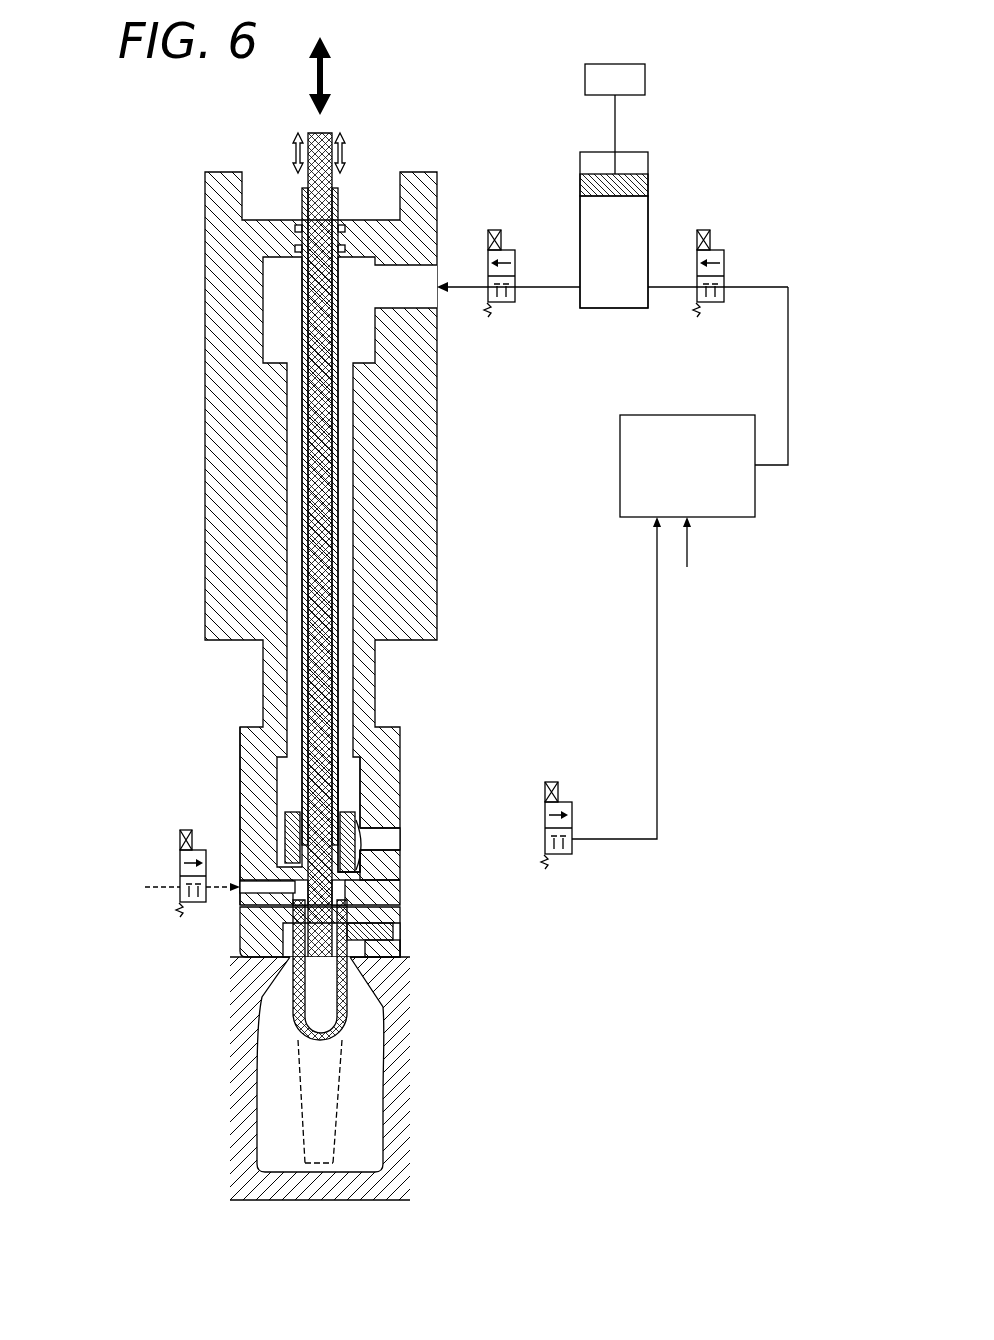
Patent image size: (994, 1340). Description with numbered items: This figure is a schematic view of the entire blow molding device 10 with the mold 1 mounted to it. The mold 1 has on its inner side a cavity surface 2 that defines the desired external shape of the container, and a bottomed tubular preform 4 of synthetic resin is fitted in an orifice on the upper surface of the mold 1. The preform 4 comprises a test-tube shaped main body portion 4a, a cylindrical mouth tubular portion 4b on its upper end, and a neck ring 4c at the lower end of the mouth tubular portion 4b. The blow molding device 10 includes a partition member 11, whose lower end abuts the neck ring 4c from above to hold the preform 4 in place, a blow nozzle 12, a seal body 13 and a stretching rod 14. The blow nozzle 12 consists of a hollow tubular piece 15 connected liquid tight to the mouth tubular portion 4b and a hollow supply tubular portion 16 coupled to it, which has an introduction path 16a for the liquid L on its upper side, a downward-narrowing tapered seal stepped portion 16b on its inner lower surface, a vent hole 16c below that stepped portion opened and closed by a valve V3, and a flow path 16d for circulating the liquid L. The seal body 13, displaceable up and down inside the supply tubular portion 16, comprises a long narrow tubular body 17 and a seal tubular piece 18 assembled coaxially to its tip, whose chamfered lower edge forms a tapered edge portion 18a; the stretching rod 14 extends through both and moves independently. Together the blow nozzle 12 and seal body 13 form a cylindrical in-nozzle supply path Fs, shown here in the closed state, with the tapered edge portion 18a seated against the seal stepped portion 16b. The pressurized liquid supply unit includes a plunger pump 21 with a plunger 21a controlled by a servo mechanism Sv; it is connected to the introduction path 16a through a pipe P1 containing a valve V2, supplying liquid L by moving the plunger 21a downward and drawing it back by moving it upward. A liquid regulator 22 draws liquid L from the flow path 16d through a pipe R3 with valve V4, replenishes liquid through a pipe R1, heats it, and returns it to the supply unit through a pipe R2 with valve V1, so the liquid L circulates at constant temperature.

The blow molding mold 1 is at (351, 1078).
The cavity surface 2 is at (380, 1120).
The preform 4 is at (317, 1031).
The main body portion 4a is at (350, 987).
The mouth tubular portion 4b is at (393, 932).
The neck ring 4c is at (400, 945).
The blow molding device 10 is at (448, 618).
The partition member 11 is at (238, 945).
The blow nozzle 12 is at (226, 829).
The seal body 13 is at (321, 538).
The stretching rod 14 is at (322, 480).
The tubular piece 15 is at (240, 932).
The supply tubular portion 16 is at (245, 778).
The introduction path 16a is at (425, 280).
The seal stepped portion 16b is at (350, 812).
The vent hole 16c is at (260, 870).
The flow path 16d is at (400, 839).
The tubular body 17 is at (258, 640).
The seal tubular piece 18 is at (272, 782).
The tapered edge portion 18a is at (370, 880).
The plunger pump 21 is at (676, 201).
The plunger 21a is at (640, 185).
The liquid regulator 22 is at (614, 471).
The in-nozzle supply path Fs is at (340, 495).
The liquid L is at (605, 246).
The pipe P1 is at (545, 288).
The pipe R1 is at (691, 558).
The pipe R2 is at (790, 375).
The pipe R3 is at (617, 842).
The servo mechanism Sv is at (648, 80).
The valve V1 is at (712, 305).
The valve V2 is at (505, 305).
The valve V3 is at (206, 905).
The valve V4 is at (565, 857).